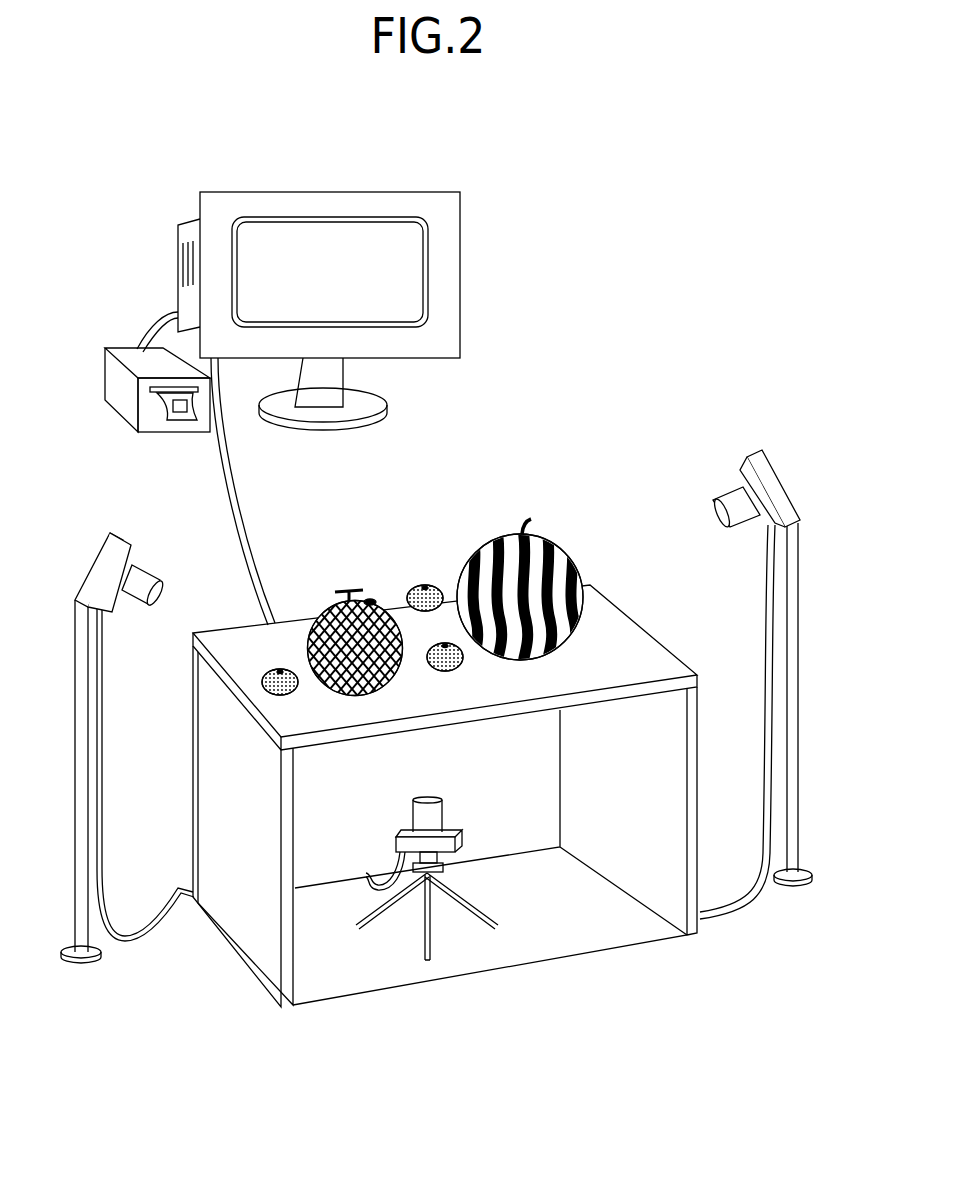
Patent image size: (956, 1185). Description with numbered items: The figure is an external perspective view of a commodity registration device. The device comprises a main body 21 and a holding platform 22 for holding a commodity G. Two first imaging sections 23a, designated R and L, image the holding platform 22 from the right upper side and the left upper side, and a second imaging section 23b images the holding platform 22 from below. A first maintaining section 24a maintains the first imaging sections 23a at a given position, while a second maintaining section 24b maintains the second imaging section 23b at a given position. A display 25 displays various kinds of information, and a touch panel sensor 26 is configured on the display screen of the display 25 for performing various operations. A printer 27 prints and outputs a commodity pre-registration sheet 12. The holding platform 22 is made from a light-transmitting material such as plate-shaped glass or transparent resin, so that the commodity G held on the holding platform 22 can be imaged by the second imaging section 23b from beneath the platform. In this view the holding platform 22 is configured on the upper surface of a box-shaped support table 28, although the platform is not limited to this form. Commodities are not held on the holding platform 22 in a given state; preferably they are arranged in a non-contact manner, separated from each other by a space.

The commodity pre-registration sheet 12 is at (172, 415).
The main body 21 is at (178, 227).
The holding platform 22 is at (672, 668).
The first imaging sections 23a is at (157, 570).
The second imaging section 23b is at (458, 825).
The first maintaining section 24a is at (73, 597).
The second maintaining section 24b is at (495, 912).
The display 25 is at (289, 192).
The touch panel sensor 26 is at (450, 318).
The printer 27 is at (105, 368).
The support table 28 is at (201, 811).
The commodity G is at (280, 669).